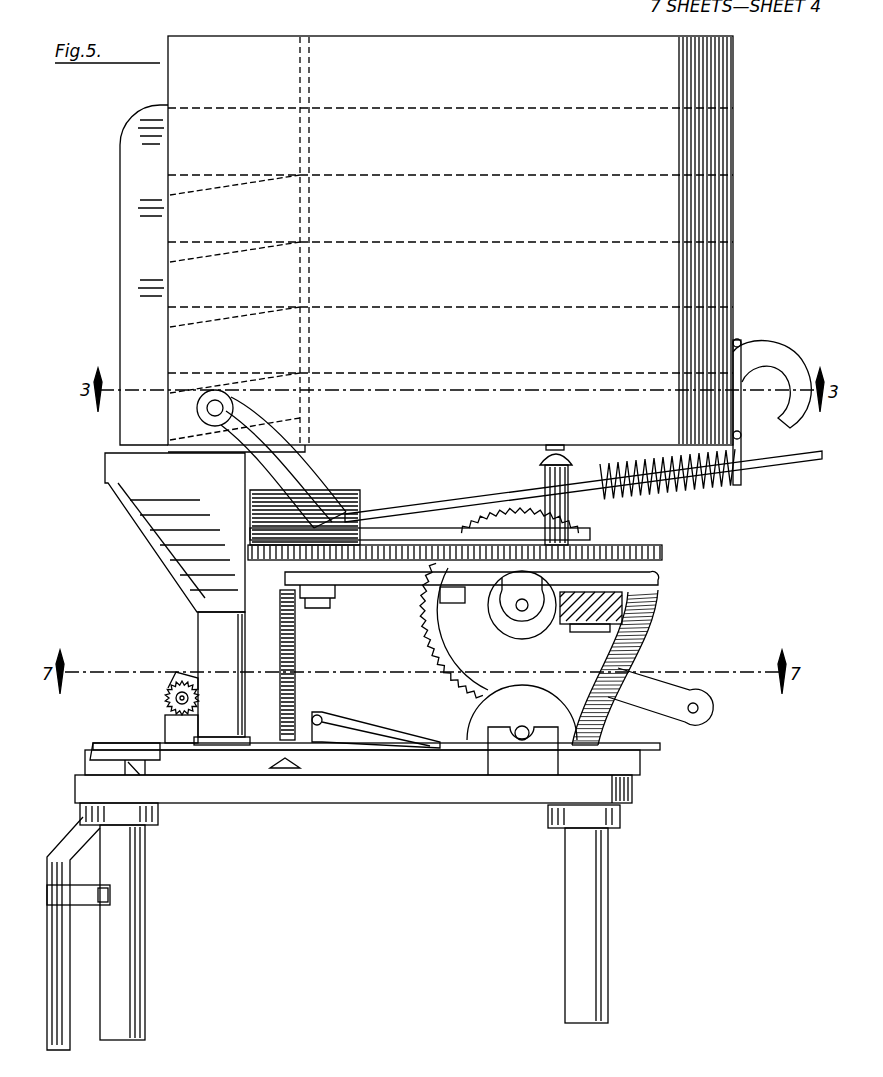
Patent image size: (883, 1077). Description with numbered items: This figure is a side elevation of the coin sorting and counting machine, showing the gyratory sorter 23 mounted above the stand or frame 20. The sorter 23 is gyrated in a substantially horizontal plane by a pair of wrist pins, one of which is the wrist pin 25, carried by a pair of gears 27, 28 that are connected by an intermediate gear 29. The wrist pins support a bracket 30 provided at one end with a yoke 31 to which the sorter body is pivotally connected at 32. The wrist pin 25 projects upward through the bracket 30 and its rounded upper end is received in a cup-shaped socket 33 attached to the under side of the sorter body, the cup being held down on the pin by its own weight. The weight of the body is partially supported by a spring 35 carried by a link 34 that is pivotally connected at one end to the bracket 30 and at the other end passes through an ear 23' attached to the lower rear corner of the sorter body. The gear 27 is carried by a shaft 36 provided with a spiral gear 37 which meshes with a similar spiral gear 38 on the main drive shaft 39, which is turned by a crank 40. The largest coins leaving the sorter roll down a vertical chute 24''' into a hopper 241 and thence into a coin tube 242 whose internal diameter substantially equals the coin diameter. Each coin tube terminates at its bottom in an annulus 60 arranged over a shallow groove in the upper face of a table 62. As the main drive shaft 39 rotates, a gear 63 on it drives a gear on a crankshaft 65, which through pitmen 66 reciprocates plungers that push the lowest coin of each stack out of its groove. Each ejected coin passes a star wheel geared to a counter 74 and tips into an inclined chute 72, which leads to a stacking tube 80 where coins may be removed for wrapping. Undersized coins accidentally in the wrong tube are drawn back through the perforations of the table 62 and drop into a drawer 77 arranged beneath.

The stand or frame 20 is at (142, 970).
The gyratory sorter 23 is at (477, 244).
The ear 23' is at (772, 441).
The vertical chute 24''' is at (113, 275).
The wrist pin 25 is at (570, 512).
The gear 27 is at (664, 554).
The gear 28 is at (273, 558).
The intermediate gear 29 is at (418, 542).
The bracket 30 is at (417, 532).
The yoke 31 is at (292, 481).
The pivotal connection 32 is at (220, 405).
The cup-shaped socket 33 is at (540, 461).
The link 34 is at (385, 503).
The spring 35 is at (695, 472).
The shaft 36 is at (628, 652).
The spiral gear 37 is at (628, 605).
The spiral gear 38 is at (538, 620).
The main drive shaft 39 is at (476, 658).
The crank 40 is at (694, 716).
The annulus 60 is at (249, 737).
The table 62 is at (122, 742).
The gear 63 is at (437, 641).
The crankshaft 65 is at (520, 742).
The pitman 66 is at (355, 725).
The inclined chute 72 is at (85, 815).
The counter 74 is at (170, 688).
The drawer 77 is at (298, 770).
The stacking tube 80 is at (65, 932).
The hopper 241 is at (152, 527).
The coin tube 242 is at (200, 638).